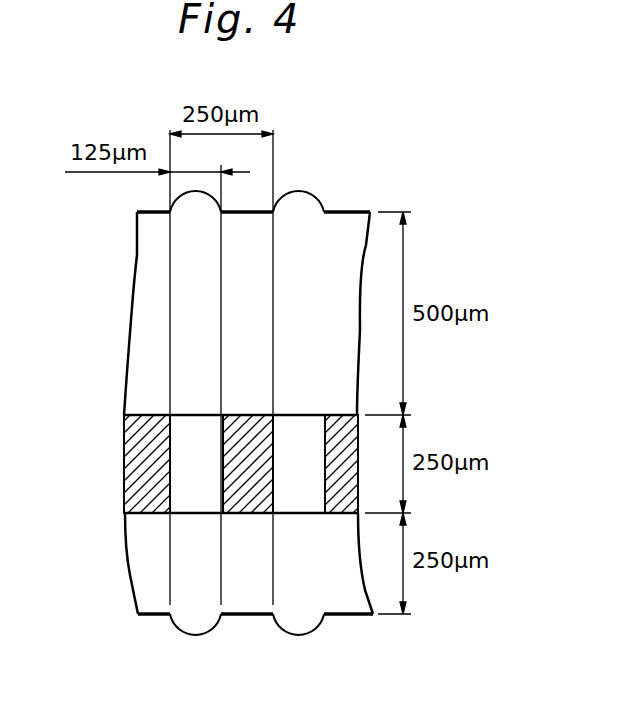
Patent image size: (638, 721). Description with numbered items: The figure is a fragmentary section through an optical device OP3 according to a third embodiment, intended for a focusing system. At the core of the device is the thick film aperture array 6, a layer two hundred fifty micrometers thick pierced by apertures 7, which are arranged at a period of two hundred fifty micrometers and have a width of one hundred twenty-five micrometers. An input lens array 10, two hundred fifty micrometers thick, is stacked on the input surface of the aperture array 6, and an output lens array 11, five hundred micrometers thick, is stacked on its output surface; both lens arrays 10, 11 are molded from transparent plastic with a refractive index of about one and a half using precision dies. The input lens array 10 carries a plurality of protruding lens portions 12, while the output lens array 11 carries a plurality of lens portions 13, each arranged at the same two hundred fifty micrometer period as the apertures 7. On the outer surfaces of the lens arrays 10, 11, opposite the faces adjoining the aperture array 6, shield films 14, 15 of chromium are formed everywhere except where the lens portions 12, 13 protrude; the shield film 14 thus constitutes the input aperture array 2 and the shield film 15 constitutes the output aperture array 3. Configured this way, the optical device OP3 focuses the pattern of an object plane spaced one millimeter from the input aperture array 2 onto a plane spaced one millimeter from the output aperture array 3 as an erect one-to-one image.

The input aperture array 2 is at (142, 617).
The output aperture array 3 is at (150, 210).
The thick film aperture array 6 is at (128, 432).
The apertures 7 is at (287, 473).
The input lens array 10 is at (138, 552).
The output lens array 11 is at (140, 287).
The lens portions 12 is at (297, 617).
The lens portions 13 is at (210, 206).
The shield film 14 is at (353, 617).
The shield film 15 is at (355, 210).
The optical device OP3 is at (361, 159).